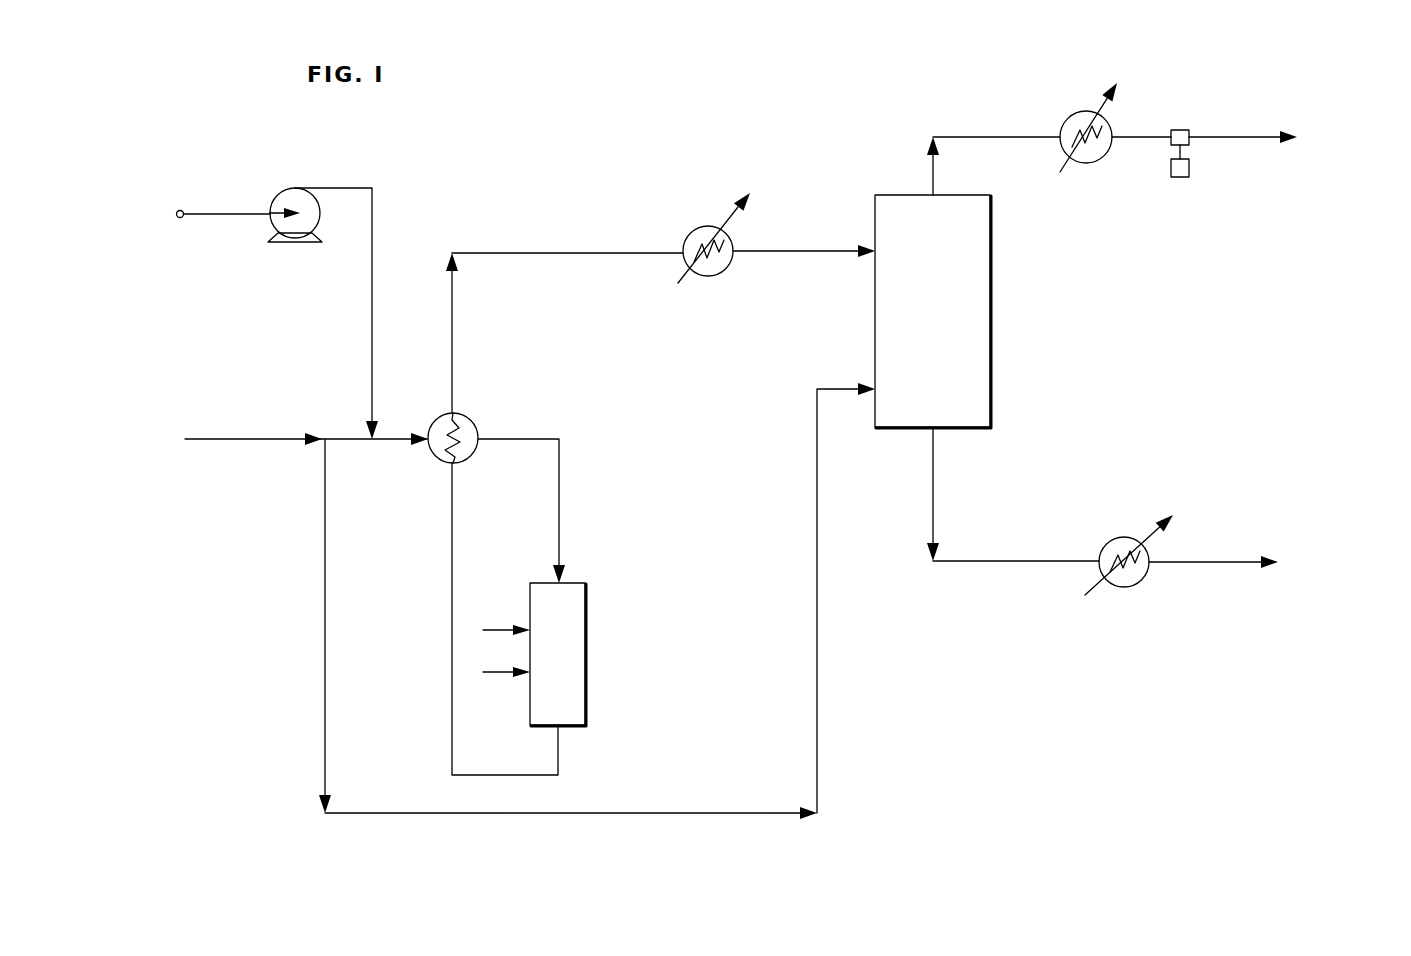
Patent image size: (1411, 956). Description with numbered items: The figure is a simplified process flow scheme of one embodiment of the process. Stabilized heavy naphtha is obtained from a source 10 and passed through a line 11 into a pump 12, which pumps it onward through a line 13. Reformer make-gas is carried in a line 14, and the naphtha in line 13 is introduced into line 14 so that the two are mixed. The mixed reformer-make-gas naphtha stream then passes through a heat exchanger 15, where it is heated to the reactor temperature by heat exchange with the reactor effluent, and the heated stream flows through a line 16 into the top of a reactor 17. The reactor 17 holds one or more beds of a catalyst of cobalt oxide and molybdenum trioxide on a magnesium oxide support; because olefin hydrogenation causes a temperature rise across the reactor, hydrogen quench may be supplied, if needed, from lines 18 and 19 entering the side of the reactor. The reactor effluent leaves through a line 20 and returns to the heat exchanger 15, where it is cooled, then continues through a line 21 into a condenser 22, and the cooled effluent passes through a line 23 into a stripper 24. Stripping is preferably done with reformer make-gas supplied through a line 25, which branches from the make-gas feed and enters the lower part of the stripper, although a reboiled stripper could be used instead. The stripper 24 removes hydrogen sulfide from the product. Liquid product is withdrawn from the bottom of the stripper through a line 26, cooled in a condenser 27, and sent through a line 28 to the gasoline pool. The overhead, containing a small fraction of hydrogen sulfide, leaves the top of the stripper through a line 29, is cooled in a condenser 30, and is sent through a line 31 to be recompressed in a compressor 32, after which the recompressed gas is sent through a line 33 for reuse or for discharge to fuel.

The source 10 is at (176, 222).
The line 11 is at (235, 214).
The pump 12 is at (280, 242).
The line 13 is at (345, 188).
The line 14 is at (283, 439).
The heat exchanger 15 is at (471, 420).
The line 16 is at (559, 472).
The reactor 17 is at (628, 665).
The line 18 is at (494, 630).
The line 19 is at (497, 672).
The line 20 is at (558, 750).
The line 21 is at (453, 317).
The condenser 22 is at (700, 227).
The line 23 is at (793, 253).
The stripper 24 is at (990, 280).
The line 25 is at (325, 668).
The line 26 is at (933, 480).
The condenser 27 is at (1135, 587).
The line 28 is at (1214, 565).
The line 29 is at (975, 137).
The condenser 30 is at (1090, 163).
The line 31 is at (1138, 137).
The compressor 32 is at (1183, 129).
The line 33 is at (1243, 138).